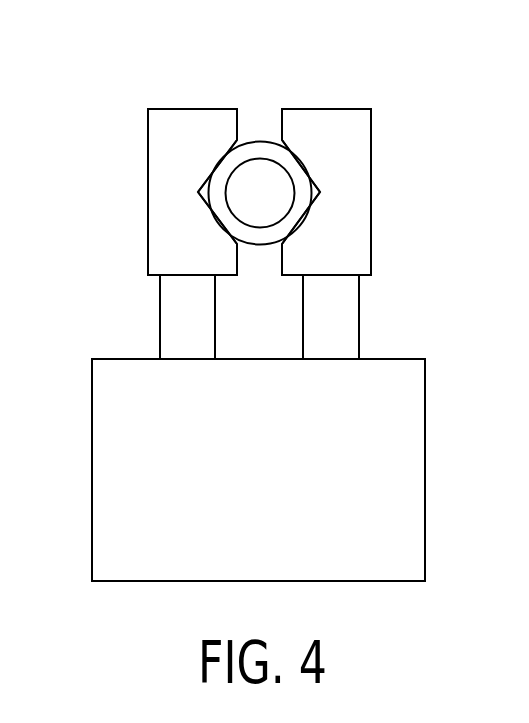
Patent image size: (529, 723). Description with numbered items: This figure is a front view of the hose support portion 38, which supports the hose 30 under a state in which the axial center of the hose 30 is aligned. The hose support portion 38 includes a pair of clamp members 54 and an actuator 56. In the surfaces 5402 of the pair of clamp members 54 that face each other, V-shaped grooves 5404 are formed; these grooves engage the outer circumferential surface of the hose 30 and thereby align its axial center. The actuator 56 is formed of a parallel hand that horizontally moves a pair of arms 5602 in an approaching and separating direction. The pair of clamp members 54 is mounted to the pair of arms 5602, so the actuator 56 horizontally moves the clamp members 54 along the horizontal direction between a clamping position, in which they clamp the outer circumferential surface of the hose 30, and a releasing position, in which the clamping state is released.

The hose 30 is at (258, 141).
The hose support portion 38 is at (304, 80).
The clamp members 54 is at (148, 143).
The surfaces 5402 is at (241, 118).
The V-shaped grooves 5404 is at (213, 214).
The actuator 56 is at (425, 420).
The arms 5602 is at (160, 312).